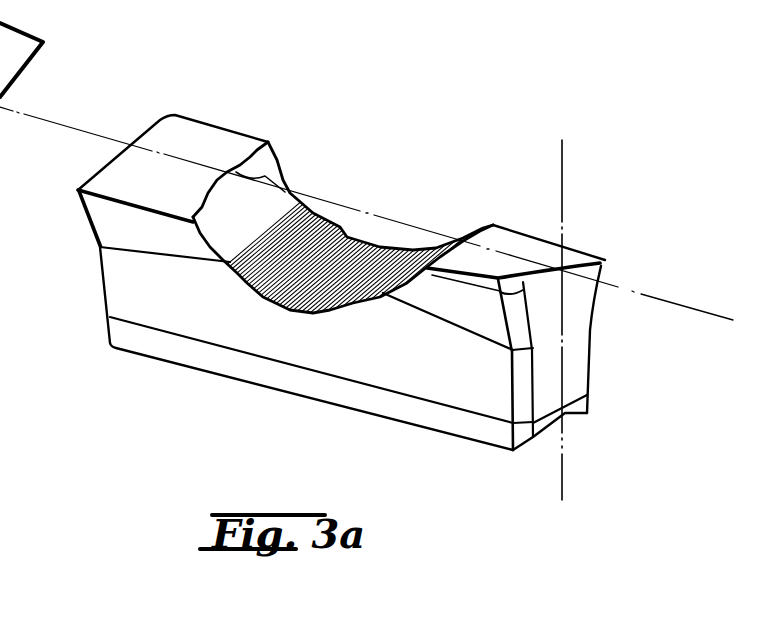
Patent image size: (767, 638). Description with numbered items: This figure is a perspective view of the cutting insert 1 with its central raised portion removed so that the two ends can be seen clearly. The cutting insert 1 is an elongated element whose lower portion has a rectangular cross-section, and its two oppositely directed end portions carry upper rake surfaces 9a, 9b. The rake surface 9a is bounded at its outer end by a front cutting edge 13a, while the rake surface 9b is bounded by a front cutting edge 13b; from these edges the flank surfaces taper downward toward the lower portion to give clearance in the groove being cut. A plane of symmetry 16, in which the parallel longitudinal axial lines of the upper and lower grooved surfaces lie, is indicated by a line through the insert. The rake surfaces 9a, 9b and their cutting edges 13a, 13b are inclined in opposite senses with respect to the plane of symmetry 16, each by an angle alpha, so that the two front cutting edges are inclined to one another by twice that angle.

The cutting insert 1 is at (262, 125).
The upper rake surface 9a is at (187, 140).
The upper rake surface 9b is at (510, 240).
The front cutting edge 13a is at (112, 152).
The front cutting edge 13b is at (607, 262).
The plane of symmetry 16 is at (565, 156).